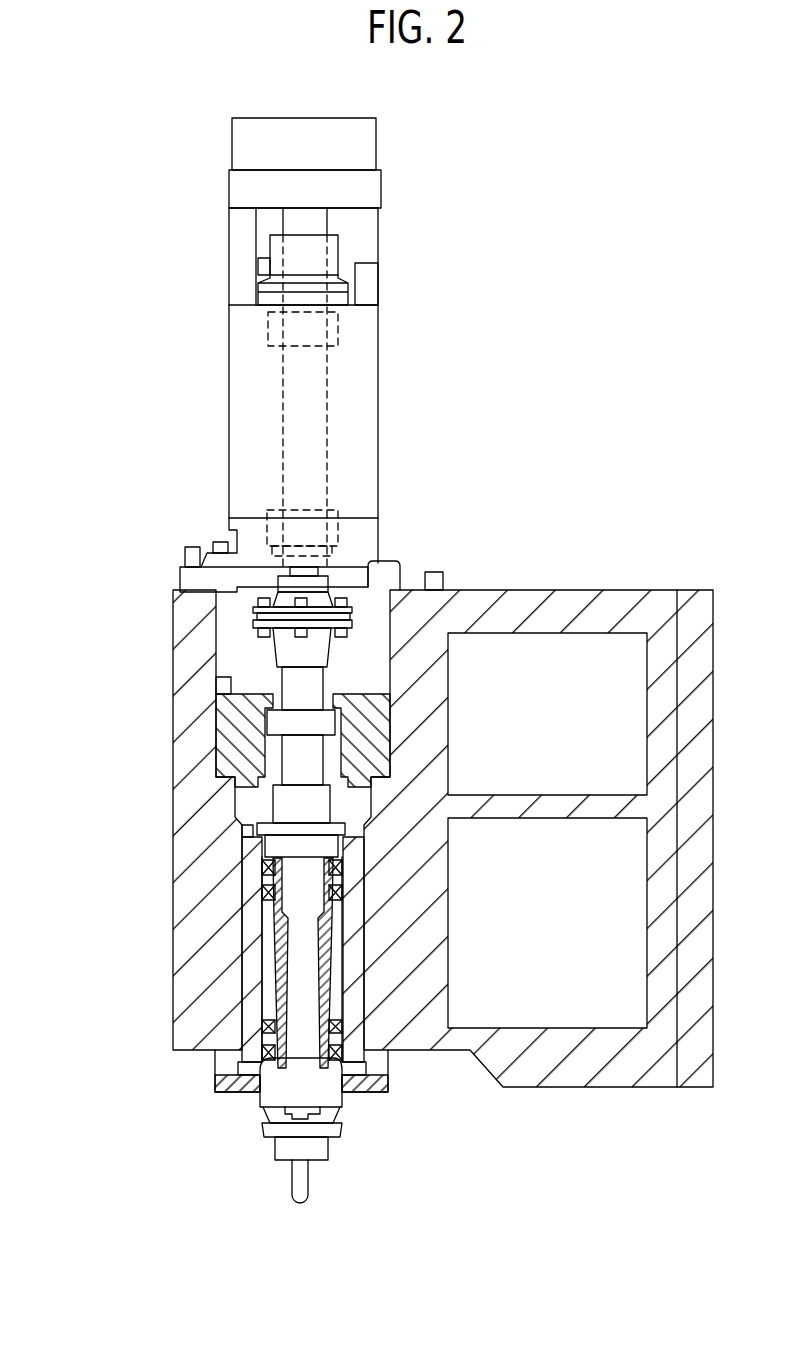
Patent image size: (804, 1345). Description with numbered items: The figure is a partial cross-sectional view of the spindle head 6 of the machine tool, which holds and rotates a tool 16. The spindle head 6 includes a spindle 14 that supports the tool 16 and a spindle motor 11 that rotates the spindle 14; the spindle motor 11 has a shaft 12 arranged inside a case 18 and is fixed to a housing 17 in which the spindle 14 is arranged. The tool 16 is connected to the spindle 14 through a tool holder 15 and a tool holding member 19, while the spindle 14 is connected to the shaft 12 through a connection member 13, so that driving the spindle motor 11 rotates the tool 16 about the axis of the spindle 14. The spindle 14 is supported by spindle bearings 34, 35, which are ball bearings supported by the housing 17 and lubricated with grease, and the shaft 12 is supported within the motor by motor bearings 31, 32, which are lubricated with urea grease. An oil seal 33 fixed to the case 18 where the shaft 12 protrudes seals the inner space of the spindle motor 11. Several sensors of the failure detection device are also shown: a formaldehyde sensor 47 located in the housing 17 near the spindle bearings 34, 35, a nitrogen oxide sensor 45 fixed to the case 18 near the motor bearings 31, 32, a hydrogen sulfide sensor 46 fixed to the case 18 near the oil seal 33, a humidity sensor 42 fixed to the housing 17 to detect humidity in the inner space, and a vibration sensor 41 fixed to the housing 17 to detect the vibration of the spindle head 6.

The spindle head 6 is at (472, 233).
The spindle motor 11 is at (226, 359).
The shaft 12 is at (326, 456).
The connection member 13 is at (253, 617).
The spindle 14 is at (303, 765).
The tool holder 15 is at (262, 1128).
The tool 16 is at (300, 1180).
The housing 17 is at (568, 1073).
The case 18 is at (363, 386).
The tool holding member 19 is at (297, 953).
The motor bearing 31 is at (338, 537).
The motor bearing 32 is at (338, 331).
The oil seal 33 is at (332, 562).
The spindle bearing 34 is at (262, 887).
The spindle bearing 35 is at (262, 1048).
The vibration sensor 41 is at (434, 576).
The humidity sensor 42 is at (222, 683).
The nitrogen oxide sensor 45 is at (262, 263).
The hydrogen sulfide sensor 46 is at (190, 558).
The formaldehyde sensor 47 is at (248, 830).